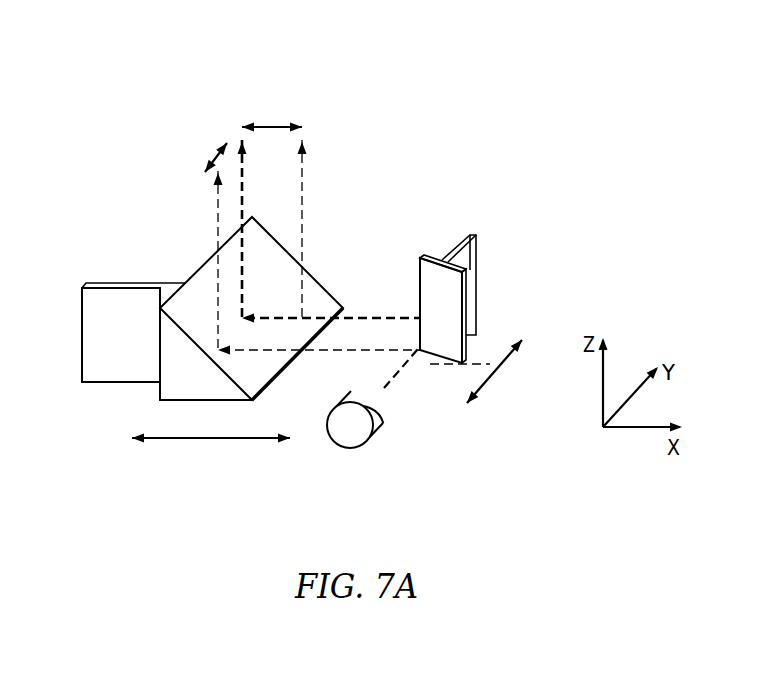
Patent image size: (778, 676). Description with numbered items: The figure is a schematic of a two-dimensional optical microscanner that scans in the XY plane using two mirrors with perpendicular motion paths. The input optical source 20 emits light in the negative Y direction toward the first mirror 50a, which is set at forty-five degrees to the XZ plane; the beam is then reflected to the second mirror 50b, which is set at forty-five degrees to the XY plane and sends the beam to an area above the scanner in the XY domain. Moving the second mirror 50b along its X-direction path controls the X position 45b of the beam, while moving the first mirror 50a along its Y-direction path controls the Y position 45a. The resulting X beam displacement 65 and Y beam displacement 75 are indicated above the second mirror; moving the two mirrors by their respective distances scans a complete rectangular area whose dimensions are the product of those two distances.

The optical source 20 is at (353, 450).
The Y position of the beam 45a is at (495, 368).
The X position of the beam 45b is at (160, 437).
The mirror M1 50a is at (463, 302).
The mirror M2 50b is at (198, 267).
The X beam displacement 65 is at (275, 125).
The Y beam displacement 75 is at (215, 153).